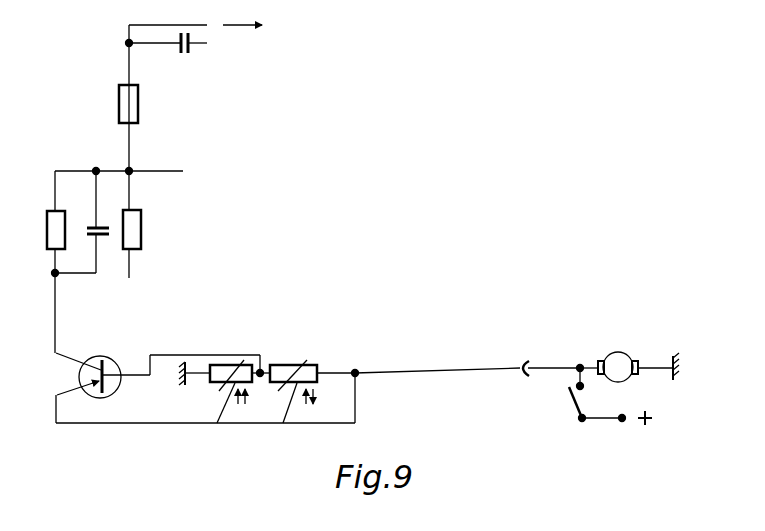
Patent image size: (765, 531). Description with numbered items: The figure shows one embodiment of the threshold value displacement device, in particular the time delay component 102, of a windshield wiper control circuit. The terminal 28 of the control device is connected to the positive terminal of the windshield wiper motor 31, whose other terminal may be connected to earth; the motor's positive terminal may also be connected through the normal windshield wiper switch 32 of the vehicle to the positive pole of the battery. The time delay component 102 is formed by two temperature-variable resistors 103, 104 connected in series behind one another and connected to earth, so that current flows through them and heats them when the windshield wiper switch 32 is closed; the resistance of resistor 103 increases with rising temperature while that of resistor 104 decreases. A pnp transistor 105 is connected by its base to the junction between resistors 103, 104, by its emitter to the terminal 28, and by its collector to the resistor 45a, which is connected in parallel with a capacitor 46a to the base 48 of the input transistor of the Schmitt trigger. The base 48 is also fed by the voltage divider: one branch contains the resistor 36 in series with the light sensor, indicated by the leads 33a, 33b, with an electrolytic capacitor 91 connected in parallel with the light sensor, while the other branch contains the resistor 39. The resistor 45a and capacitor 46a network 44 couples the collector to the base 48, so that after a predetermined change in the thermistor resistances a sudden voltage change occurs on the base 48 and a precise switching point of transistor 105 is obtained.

The terminal 28 is at (522, 360).
The windshield wiper motor 31 is at (620, 353).
The windshield wiper switch 32 is at (570, 402).
The light sensor lead 33a is at (292, 26).
The light sensor lead 33b is at (292, 26).
The resistor 36 is at (138, 105).
The resistor 39 is at (141, 233).
The RC network 44 is at (108, 301).
The resistor 45a is at (63, 247).
The capacitor 46a is at (105, 236).
The base 48 is at (183, 171).
The electrolytic capacitor 91 is at (190, 52).
The time delay component 102 is at (170, 415).
The temperature-variable resistor 103 is at (230, 408).
The temperature-variable resistor 104 is at (293, 408).
The pnp transistor 105 is at (112, 391).